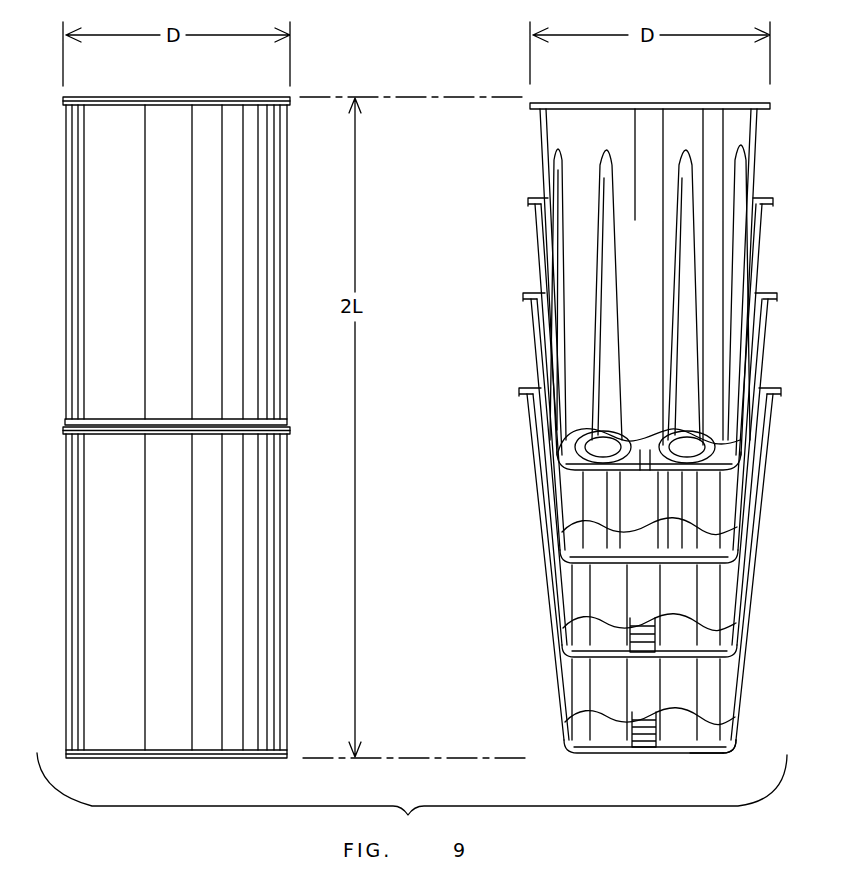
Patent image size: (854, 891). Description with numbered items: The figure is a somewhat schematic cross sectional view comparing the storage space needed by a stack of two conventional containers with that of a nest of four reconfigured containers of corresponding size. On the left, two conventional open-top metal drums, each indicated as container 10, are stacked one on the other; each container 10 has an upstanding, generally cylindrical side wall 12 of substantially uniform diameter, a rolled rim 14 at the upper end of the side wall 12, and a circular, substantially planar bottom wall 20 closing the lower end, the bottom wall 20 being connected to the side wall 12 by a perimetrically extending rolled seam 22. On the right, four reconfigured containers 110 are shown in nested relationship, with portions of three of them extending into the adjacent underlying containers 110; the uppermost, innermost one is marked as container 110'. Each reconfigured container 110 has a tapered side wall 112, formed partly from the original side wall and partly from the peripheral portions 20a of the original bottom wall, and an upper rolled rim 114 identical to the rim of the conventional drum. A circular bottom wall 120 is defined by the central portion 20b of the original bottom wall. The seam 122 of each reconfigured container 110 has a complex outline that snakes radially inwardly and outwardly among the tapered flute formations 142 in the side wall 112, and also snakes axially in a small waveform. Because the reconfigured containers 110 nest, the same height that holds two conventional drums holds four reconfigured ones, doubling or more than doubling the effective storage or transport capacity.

The container 10 is at (205, 428).
The side wall 12 is at (283, 216).
The rolled rim 14 is at (212, 99).
The bottom wall 20 is at (198, 760).
The seam 22 is at (252, 420).
The innermost nested tubular module 110' is at (634, 286).
The reconfigured container 110 is at (632, 429).
The side wall 112 is at (747, 128).
The rolled rim 114 is at (614, 103).
The bottom wall 120 is at (597, 756).
The seam 122 is at (648, 428).
The tapered flute formations 142 is at (556, 200).
The peripheral portions 20a is at (742, 726).
The central portion 20b is at (700, 757).